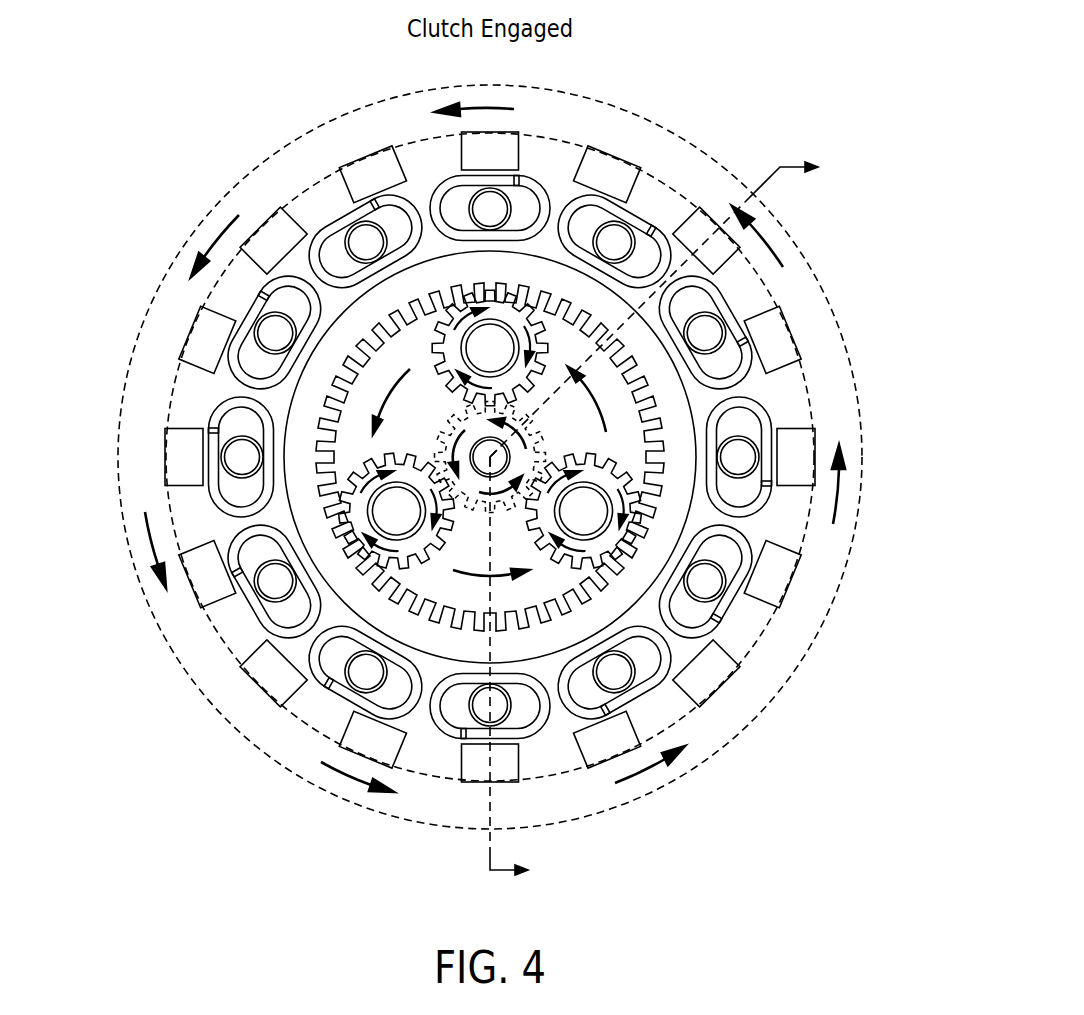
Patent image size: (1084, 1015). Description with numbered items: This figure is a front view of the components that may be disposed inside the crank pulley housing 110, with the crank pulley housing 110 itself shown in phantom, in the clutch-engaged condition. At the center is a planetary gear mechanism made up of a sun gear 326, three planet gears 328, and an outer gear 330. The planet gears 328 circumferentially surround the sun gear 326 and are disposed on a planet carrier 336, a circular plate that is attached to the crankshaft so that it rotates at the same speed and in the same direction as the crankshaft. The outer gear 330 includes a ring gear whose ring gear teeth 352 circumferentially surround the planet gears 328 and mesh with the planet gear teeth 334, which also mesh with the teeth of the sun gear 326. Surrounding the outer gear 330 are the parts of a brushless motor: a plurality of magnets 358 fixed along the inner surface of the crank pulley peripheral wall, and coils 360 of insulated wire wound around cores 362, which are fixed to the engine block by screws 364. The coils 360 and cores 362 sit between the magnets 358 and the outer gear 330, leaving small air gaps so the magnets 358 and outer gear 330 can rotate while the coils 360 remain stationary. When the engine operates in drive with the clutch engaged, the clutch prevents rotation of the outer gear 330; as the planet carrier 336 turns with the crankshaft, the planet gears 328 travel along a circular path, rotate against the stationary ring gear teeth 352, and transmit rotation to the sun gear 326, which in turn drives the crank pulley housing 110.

The crank pulley housing 110 is at (663, 125).
The magnets 358 is at (272, 233).
The coils 360 is at (710, 287).
The cores 362 is at (703, 303).
The screws 364 is at (713, 332).
The outer gear 330 is at (683, 407).
The ring gear teeth 352 is at (663, 502).
The planet gears 328 is at (443, 371).
The sun gear 326 is at (533, 438).
The planet gear teeth 334 is at (537, 535).
The planet carrier 336 is at (576, 416).